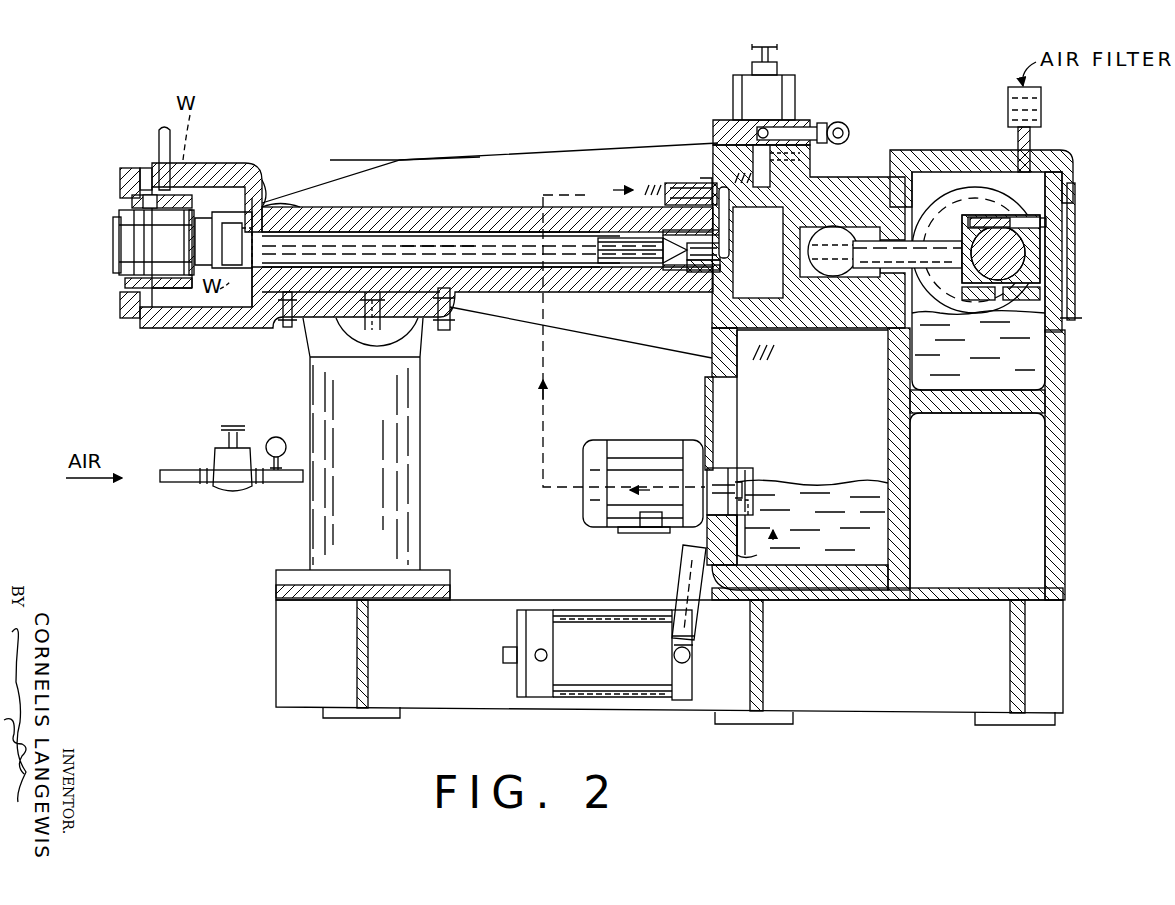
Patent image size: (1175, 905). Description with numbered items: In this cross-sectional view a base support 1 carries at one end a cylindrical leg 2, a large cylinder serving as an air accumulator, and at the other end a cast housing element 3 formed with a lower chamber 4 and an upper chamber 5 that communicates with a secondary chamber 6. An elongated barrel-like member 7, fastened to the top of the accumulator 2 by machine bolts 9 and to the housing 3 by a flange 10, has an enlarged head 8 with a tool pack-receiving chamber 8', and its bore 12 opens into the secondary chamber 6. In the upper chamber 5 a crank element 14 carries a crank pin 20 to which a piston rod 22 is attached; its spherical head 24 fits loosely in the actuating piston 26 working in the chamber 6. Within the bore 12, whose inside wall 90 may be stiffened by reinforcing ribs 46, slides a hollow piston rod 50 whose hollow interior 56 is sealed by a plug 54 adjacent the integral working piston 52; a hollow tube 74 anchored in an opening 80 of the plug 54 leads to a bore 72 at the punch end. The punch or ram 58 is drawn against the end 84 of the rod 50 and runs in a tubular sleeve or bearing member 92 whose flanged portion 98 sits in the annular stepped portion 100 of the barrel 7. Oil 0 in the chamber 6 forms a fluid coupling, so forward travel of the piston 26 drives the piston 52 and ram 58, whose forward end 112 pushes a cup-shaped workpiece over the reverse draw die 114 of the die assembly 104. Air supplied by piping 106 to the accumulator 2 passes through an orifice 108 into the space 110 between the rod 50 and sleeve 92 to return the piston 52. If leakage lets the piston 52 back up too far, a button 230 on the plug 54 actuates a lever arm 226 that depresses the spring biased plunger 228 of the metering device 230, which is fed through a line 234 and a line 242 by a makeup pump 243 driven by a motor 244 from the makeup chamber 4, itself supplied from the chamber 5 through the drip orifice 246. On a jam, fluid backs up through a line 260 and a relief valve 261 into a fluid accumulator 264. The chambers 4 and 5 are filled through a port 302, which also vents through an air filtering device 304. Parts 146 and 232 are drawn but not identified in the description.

The oil 0 is at (760, 300).
The base support 1 is at (273, 626).
The cylindrical leg 2 is at (368, 508).
The cast housing element 3 is at (1068, 508).
The lower chamber 4 is at (812, 406).
The upper chamber 5 is at (930, 178).
The secondary chamber 6 is at (770, 236).
The barrel-like member 7 is at (463, 205).
The head 8 is at (416, 216).
The tool pack-receiving chamber 8' is at (226, 199).
The machine bolts 9 is at (282, 330).
The flange 10 is at (670, 340).
The bore 12 is at (508, 236).
The crank element 14 is at (978, 183).
The crank pin 20 is at (1012, 255).
The piston rod 22 is at (920, 248).
The spherical head 24 is at (842, 232).
The actuating piston 26 is at (843, 298).
The reinforcing ribs 46 is at (446, 189).
The hollow piston rod 50 is at (605, 232).
The working piston 52 is at (693, 262).
The plug 54 is at (720, 266).
The hollow interior 56 is at (600, 240).
The punch or ram 58 is at (372, 236).
The bore 72 is at (408, 170).
The hollow tube 74 is at (478, 236).
The opening 80 is at (655, 270).
The end of hollow piston rod 84 is at (372, 320).
The inside wall 90 is at (455, 195).
The tubular sleeve 92 is at (322, 232).
The flanged portion 98 is at (275, 205).
The annular stepped portion 100 is at (300, 190).
The die assembly 104 is at (118, 263).
The piping 106 is at (205, 486).
The orifice means 108 is at (375, 320).
The space 110 is at (448, 328).
The forward end of punch 112 is at (243, 307).
The reverse draw die 114 is at (189, 255).
The air pipe 146 is at (155, 132).
The lever arm 226 is at (733, 218).
The spring biased plunger 228 is at (708, 200).
The metering device 230 is at (729, 250).
The valve 232 is at (698, 200).
The line 234 is at (541, 420).
The line 242 is at (740, 488).
The makeup pump 243 is at (737, 475).
The motor 244 is at (648, 428).
The drip orifice 246 is at (918, 338).
The line 260 is at (740, 132).
The relief valve 261 is at (778, 92).
The fluid accumulator 264 is at (622, 670).
The port 302 is at (1032, 147).
The air filtering device 304 is at (1045, 110).